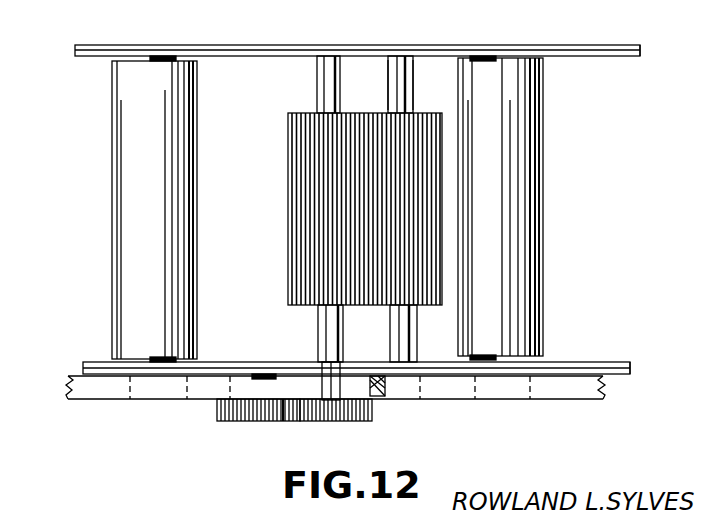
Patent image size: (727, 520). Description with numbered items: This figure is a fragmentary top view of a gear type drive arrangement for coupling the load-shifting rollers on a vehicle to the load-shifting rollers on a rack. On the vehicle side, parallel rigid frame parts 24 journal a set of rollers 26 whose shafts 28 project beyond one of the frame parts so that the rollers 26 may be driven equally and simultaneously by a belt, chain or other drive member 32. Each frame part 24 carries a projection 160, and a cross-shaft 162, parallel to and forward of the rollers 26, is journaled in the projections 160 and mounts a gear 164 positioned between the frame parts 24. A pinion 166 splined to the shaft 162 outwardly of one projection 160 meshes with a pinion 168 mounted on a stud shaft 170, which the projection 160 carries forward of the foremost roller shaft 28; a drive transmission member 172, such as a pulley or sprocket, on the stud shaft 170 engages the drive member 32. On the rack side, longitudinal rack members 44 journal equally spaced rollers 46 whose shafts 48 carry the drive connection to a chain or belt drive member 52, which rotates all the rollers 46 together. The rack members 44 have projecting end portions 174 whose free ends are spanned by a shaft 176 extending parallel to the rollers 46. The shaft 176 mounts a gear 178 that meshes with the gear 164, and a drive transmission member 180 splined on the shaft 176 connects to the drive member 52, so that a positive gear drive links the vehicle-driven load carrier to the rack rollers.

The frame parts 24 is at (101, 46).
The rollers 26 is at (128, 180).
The roller shafts 28 is at (155, 56).
The drive member 32 is at (97, 396).
The longitudinal rack members 44 is at (617, 52).
The rack rollers 46 is at (523, 206).
The rack roller shafts 48 is at (498, 352).
The rack drive member 52 is at (566, 394).
The projection 160 is at (301, 51).
The cross-shaft 162 is at (332, 339).
The gear 164 is at (303, 250).
The pinion 166 is at (356, 418).
The pinion 168 is at (234, 413).
The stud shaft 170 is at (262, 373).
The drive transmission member 172 is at (284, 406).
The projecting end portions 174 is at (451, 55).
The shaft 176 is at (400, 86).
The gear 178 is at (398, 132).
The drive transmission member 180 is at (386, 390).